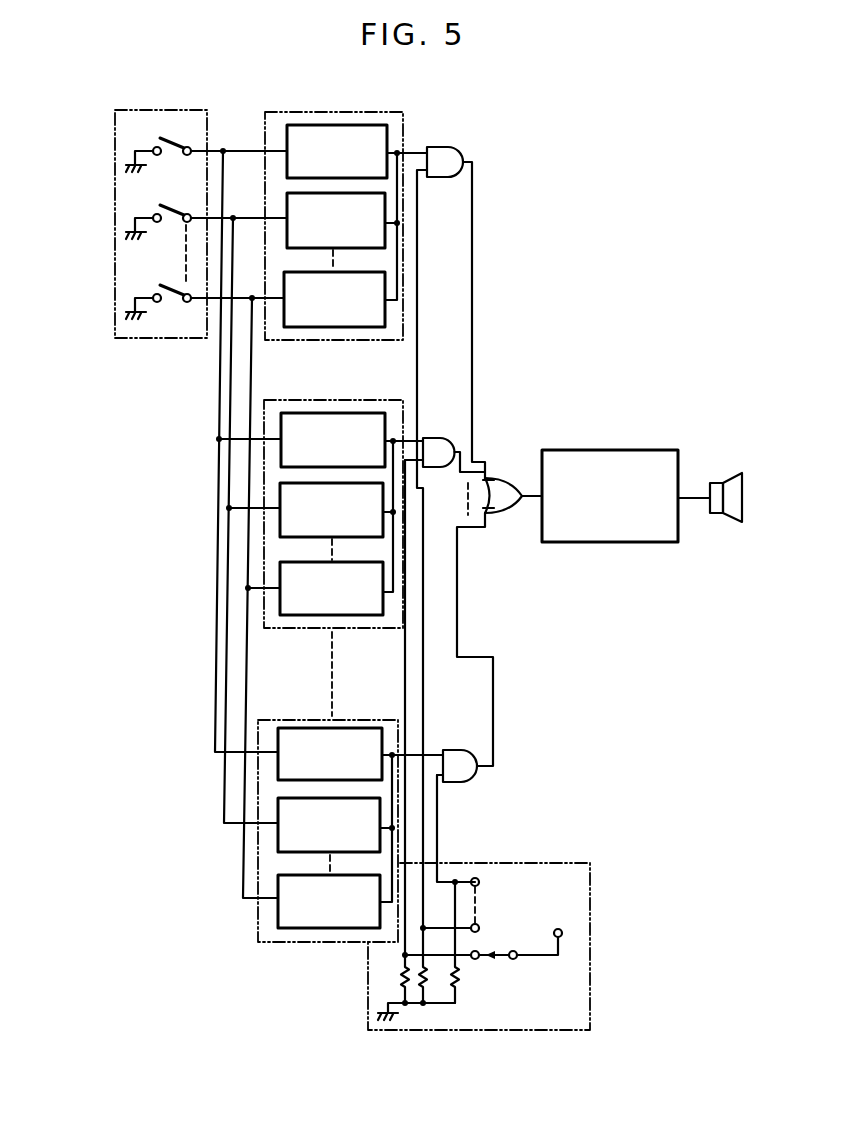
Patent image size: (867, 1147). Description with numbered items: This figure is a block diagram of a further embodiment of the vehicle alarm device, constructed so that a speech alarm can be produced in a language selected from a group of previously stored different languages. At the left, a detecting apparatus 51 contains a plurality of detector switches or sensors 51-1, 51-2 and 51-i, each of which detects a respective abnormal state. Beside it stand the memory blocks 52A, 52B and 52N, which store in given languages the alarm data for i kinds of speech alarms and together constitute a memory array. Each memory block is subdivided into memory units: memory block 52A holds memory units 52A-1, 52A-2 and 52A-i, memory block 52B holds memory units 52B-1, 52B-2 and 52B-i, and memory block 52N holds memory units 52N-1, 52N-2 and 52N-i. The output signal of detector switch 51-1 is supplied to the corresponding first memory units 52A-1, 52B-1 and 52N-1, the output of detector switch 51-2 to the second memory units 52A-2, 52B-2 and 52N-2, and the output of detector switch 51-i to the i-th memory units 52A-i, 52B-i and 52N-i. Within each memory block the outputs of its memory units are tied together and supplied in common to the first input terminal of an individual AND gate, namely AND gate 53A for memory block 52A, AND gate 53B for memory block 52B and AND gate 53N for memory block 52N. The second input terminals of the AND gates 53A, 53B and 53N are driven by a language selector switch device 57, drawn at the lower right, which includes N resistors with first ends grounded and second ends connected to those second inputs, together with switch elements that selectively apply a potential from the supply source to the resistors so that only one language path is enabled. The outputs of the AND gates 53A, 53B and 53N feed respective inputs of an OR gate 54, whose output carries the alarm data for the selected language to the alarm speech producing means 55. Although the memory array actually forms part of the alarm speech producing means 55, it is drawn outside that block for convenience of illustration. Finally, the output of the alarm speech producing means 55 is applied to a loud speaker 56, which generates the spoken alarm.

The detecting apparatus 51 is at (163, 110).
The detector switch 51-1 is at (148, 142).
The detector switch 51-2 is at (150, 212).
The detector switch 51-i is at (150, 290).
The memory block 52A is at (342, 112).
The memory unit 52A-1 is at (287, 142).
The memory unit 52A-2 is at (386, 238).
The memory unit 52A-i is at (310, 328).
The memory block 52B is at (364, 400).
The memory unit 52B-1 is at (303, 413).
The memory unit 52B-2 is at (280, 490).
The memory unit 52B-i is at (280, 590).
The memory block 52N is at (362, 720).
The memory unit 52N-1 is at (300, 728).
The memory unit 52N-2 is at (278, 832).
The memory unit 52N-i is at (278, 915).
The AND gate 53A is at (441, 147).
The AND gate 53B is at (434, 438).
The AND gate 53N is at (452, 750).
The OR gate 54 is at (495, 512).
The alarm speech producing means 55 is at (626, 450).
The loud speaker 56 is at (733, 473).
The language selector switch device 57 is at (590, 960).